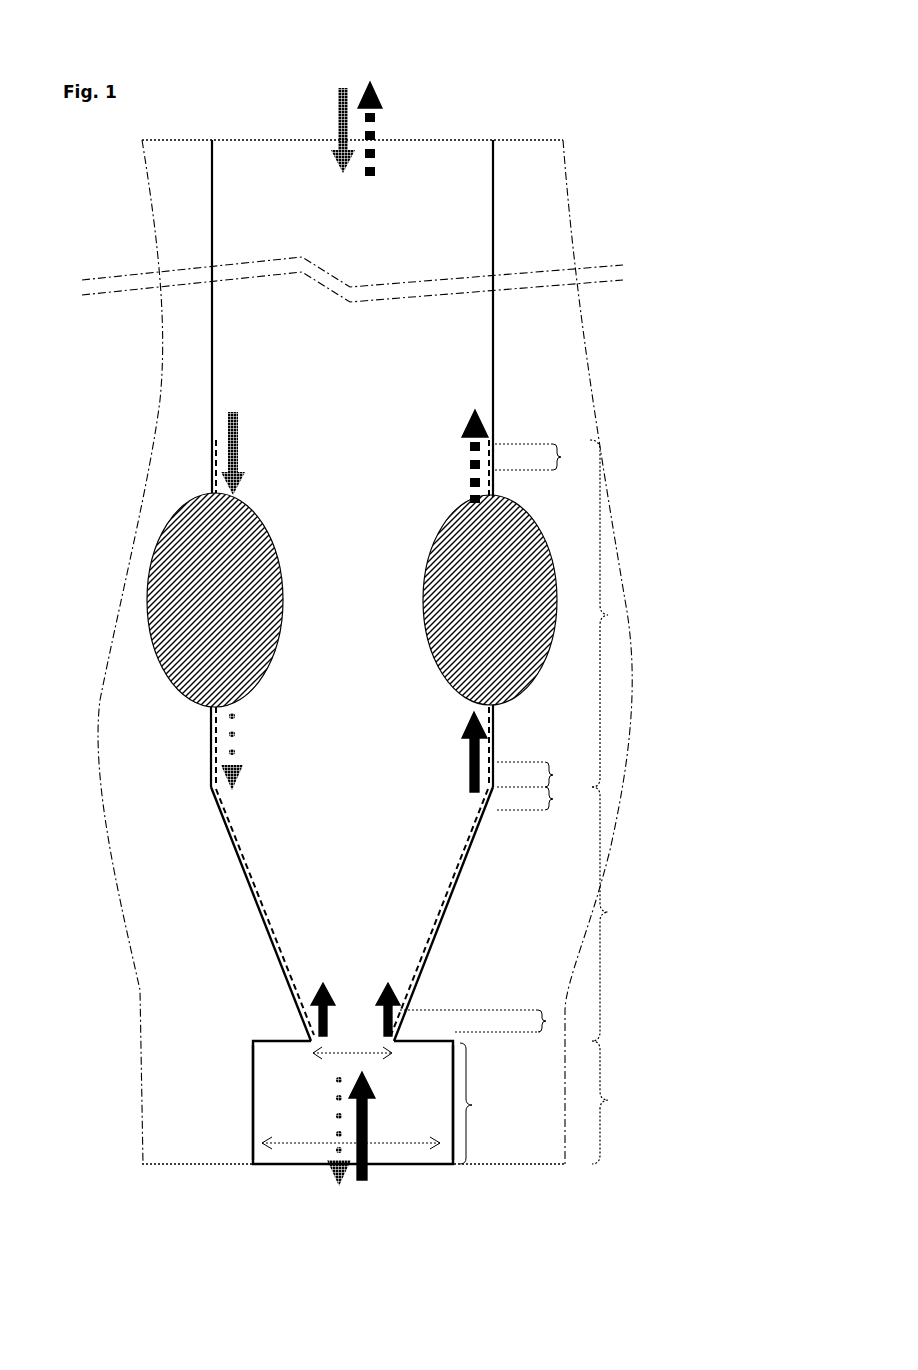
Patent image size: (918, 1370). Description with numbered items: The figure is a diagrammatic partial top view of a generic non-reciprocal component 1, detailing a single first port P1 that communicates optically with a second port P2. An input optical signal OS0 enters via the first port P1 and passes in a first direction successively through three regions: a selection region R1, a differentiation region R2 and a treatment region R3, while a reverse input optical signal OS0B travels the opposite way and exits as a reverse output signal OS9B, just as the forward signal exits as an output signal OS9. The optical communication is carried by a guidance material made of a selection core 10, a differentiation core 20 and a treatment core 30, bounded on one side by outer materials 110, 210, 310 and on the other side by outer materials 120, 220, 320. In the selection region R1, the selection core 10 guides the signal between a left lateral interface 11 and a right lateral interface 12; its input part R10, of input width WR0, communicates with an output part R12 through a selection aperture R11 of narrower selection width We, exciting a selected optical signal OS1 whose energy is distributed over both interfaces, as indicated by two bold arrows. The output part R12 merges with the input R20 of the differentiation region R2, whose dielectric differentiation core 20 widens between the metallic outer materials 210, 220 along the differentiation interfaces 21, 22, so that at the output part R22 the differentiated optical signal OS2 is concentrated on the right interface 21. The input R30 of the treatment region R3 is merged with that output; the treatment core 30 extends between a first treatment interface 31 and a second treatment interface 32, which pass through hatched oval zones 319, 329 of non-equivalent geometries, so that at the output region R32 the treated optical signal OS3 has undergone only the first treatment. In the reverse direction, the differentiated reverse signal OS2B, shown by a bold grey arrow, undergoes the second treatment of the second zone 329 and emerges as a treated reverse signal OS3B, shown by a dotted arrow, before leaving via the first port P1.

The non-reciprocal component 1 is at (652, 338).
The selection core 10 is at (318, 1124).
The left lateral interface 11 is at (453, 1110).
The right lateral interface 12 is at (253, 1112).
The differentiation core 20 is at (360, 874).
The first differentiation interface 21 is at (445, 917).
The second differentiation interface 22 is at (254, 905).
The treatment core 30 is at (400, 618).
The first treatment interface 31 is at (496, 720).
The second treatment interface 32 is at (211, 735).
The outer material 110 is at (543, 1097).
The outer material 120 is at (191, 1111).
The metallic outer material 210 is at (543, 922).
The metallic outer material 220 is at (218, 922).
The outer material 310 is at (581, 694).
The outer material 320 is at (178, 724).
The first treatment zone 319 is at (548, 545).
The second treatment zone 329 is at (150, 580).
The input optical signal OS0 is at (376, 1126).
The selected optical signal OS1 is at (388, 980).
The differentiated optical signal OS2 is at (243, 748).
The treated optical signal OS3 is at (245, 445).
The output signal OS9 is at (386, 129).
The reverse input optical signal OS0B is at (321, 130).
The differentiated reverse signal OS2B is at (230, 410).
The treated reverse signal OS3B is at (195, 751).
The reverse output signal OS9B is at (315, 1136).
The first port P1 is at (405, 1188).
The second port P2 is at (418, 105).
The selection region R1 is at (626, 1102).
The differentiation region R2 is at (626, 914).
The treatment region R3 is at (625, 613).
The input part R10 is at (496, 1106).
The selection aperture R11 is at (312, 1040).
The output part R12 is at (486, 1101).
The input of the differentiation region R20 is at (494, 1021).
The output part of the differentiation region R22 is at (546, 801).
The input of the treatment region R30 is at (546, 774).
The output region of the treatment region R32 is at (549, 457).
The selection width We is at (313, 1055).
The input width WR0 is at (278, 1167).